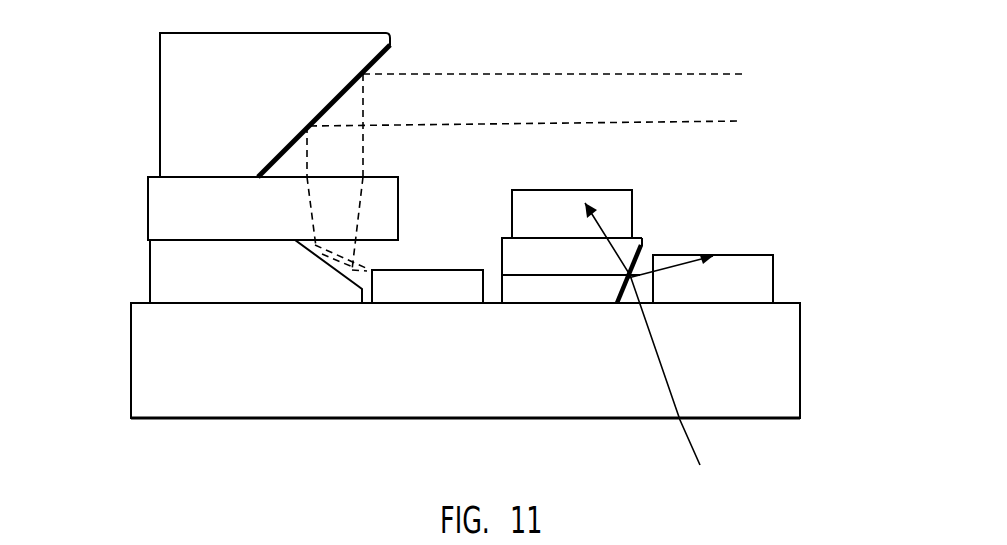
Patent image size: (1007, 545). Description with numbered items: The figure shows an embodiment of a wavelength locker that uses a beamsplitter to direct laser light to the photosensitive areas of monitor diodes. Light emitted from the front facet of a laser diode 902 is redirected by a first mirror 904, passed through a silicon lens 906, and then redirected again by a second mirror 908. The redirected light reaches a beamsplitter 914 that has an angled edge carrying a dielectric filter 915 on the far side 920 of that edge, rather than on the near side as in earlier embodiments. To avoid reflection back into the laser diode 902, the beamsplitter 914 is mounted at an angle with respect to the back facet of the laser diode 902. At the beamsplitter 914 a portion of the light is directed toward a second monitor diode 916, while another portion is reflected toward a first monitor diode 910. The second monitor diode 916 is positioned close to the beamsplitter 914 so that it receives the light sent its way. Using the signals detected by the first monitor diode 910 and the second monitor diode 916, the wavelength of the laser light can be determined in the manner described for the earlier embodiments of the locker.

The laser diode 902 is at (383, 293).
The first mirror 904 is at (150, 268).
The silicon lens 906 is at (148, 210).
The second mirror 908 is at (160, 110).
The first monitor diode 910 is at (571, 190).
The beamsplitter 914 is at (645, 247).
The dielectric filter 915 is at (626, 283).
The second monitor diode 916 is at (775, 280).
The far side 920 is at (700, 465).